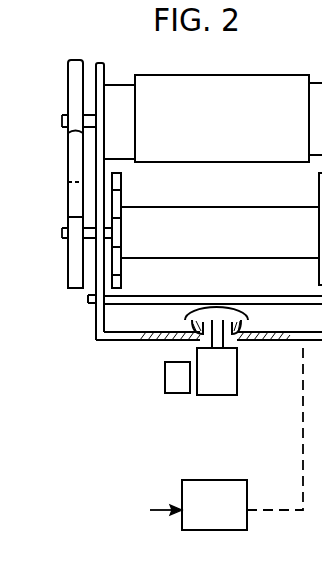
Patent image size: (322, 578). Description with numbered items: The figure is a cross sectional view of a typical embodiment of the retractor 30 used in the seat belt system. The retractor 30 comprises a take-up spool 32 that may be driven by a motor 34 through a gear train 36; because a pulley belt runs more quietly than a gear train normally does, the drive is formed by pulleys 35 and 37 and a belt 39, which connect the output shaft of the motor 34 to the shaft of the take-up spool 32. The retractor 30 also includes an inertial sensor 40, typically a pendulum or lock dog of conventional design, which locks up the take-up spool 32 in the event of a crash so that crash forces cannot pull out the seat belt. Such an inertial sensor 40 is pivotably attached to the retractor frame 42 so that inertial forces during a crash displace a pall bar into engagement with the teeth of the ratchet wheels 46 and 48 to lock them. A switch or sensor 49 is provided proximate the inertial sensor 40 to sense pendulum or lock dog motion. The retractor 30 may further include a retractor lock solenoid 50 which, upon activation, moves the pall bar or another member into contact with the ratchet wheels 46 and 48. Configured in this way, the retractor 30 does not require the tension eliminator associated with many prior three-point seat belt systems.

The retractor 30 is at (58, 46).
The take-up spool 32 is at (178, 195).
The motor 34 is at (227, 75).
The pulley 35 is at (76, 82).
The gear train 36 is at (62, 172).
The pulley 37 is at (75, 267).
The belt 39 is at (78, 193).
The inertial sensor 40 is at (237, 365).
The retractor frame 42 is at (157, 340).
The ratchet wheel 46 is at (123, 276).
The ratchet wheel 48 is at (318, 180).
The switch or sensor 49 is at (170, 395).
The retractor lock solenoid 50 is at (220, 480).